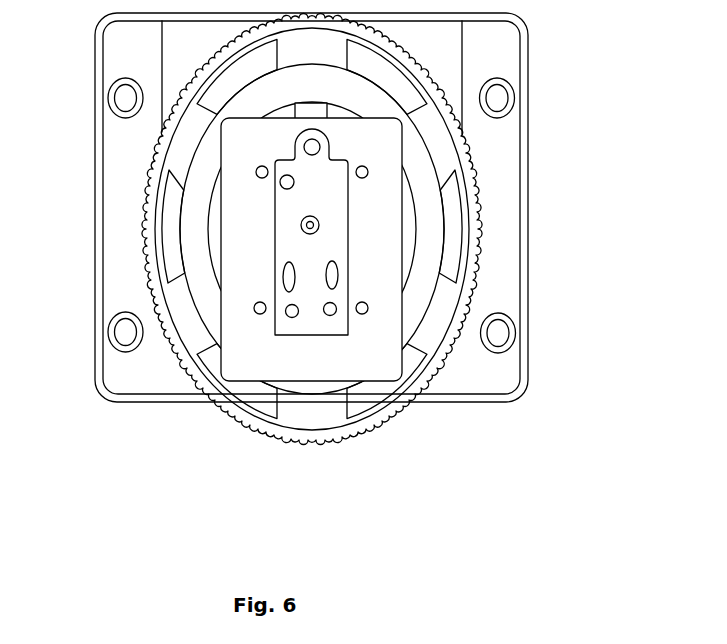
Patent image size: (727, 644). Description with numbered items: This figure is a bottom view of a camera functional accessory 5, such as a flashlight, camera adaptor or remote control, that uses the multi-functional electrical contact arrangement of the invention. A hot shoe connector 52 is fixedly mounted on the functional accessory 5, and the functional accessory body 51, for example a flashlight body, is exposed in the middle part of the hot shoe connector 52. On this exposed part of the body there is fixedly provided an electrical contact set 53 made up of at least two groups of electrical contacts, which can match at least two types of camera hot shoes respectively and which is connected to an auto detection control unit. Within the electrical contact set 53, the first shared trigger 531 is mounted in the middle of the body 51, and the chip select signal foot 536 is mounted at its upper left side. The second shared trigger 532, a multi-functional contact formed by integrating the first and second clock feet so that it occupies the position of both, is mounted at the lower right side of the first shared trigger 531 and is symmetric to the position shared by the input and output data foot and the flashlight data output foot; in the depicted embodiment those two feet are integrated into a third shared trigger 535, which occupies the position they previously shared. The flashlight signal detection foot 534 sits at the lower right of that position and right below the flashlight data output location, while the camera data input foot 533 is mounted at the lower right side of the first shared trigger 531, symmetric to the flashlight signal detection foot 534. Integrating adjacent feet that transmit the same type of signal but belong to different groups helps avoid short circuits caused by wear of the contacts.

The functional accessory 5 is at (340, 298).
The functional accessory body 51 is at (328, 106).
The hot shoe connector 52 is at (385, 156).
The electrical contact set 53 is at (318, 221).
The first shared trigger 531 is at (318, 227).
The second shared trigger 532 is at (338, 277).
The camera data input foot 533 is at (329, 315).
The flashlight signal detection foot 534 is at (290, 317).
The third shared trigger 535 is at (283, 278).
The chip select signal foot 536 is at (280, 184).